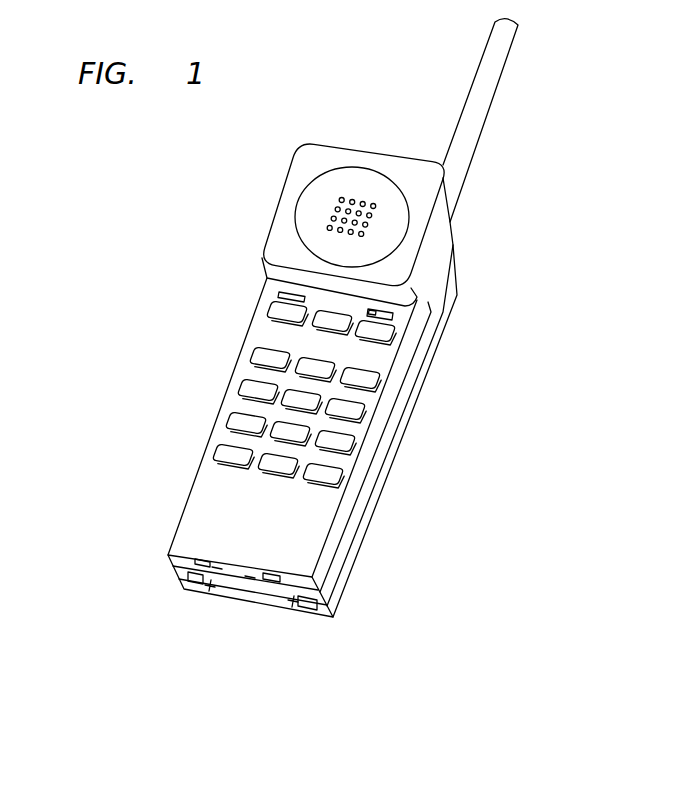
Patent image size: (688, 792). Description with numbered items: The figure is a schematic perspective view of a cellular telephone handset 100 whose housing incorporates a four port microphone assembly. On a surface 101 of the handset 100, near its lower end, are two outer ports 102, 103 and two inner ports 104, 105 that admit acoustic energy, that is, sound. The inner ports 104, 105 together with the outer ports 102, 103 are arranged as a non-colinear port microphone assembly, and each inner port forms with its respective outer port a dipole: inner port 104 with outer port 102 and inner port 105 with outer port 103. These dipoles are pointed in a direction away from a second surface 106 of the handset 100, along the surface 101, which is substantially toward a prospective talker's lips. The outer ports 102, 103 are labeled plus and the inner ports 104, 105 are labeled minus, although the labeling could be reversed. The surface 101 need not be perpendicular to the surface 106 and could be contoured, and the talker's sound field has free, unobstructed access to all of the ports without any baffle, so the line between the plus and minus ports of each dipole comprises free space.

The cellular handset 100 is at (430, 231).
The surface 101 is at (233, 578).
The outer port 102 is at (333, 604).
The outer port 103 is at (186, 576).
The inner port 104 is at (307, 577).
The inner port 105 is at (170, 555).
The surface 106 is at (205, 507).